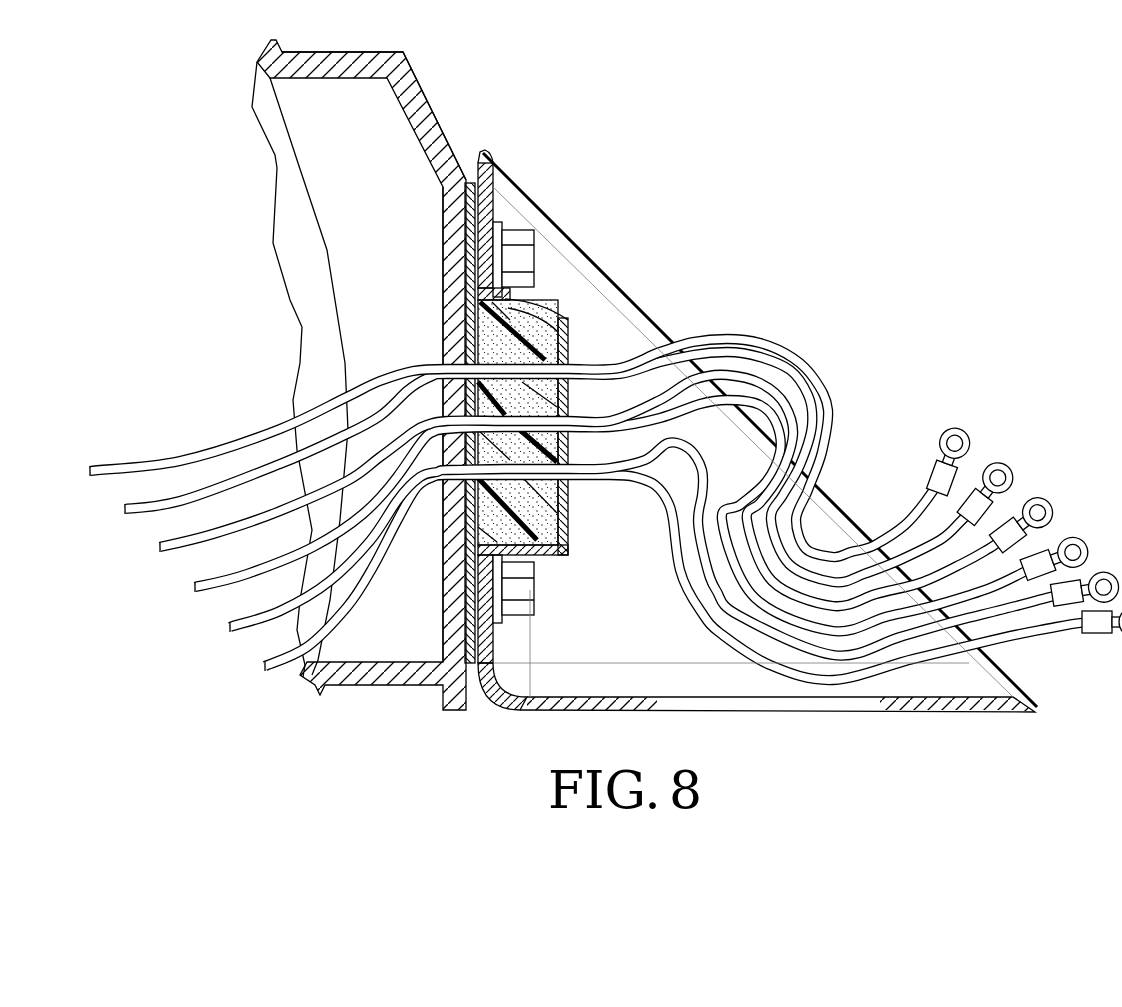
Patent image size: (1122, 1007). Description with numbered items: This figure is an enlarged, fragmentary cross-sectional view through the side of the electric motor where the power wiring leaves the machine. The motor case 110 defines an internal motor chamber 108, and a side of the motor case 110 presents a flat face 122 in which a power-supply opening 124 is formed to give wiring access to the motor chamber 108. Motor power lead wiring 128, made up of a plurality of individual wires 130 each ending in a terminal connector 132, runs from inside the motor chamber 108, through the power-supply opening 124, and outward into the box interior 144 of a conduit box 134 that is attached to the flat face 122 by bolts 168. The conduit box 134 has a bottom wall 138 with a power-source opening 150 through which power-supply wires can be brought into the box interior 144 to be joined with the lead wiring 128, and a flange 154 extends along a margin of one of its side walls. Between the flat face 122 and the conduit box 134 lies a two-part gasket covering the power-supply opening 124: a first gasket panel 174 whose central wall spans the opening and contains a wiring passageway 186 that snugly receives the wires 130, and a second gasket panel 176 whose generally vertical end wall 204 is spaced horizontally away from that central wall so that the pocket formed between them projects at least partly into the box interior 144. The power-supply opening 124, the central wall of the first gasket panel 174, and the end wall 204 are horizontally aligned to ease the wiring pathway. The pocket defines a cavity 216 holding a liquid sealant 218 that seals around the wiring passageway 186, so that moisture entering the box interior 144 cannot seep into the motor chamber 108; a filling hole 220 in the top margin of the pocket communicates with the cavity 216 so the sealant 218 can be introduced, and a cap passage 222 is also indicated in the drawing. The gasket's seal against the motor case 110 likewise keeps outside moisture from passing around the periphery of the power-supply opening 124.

The internal motor chamber 108 is at (310, 153).
The motor case 110 is at (415, 85).
The flat face 122 is at (445, 229).
The power-supply opening 124 is at (420, 423).
The motor power lead wiring 128 is at (593, 482).
The individual wires 130 is at (790, 353).
The terminal connector 132 is at (970, 437).
The conduit box 134 is at (507, 743).
The bottom wall 138 is at (950, 707).
The box interior 144 is at (668, 620).
The power-source opening 150 is at (777, 757).
The flange 154 is at (832, 497).
The bolts 168 is at (535, 263).
The first gasket panel 174 is at (465, 533).
The second gasket panel 176 is at (549, 565).
The wiring passageway 186 is at (420, 423).
The end wall 204 is at (570, 515).
The cavity 216 is at (537, 300).
The liquid sealant 218 is at (590, 360).
The filling hole 220 is at (547, 287).
The cap passage 222 is at (635, 390).